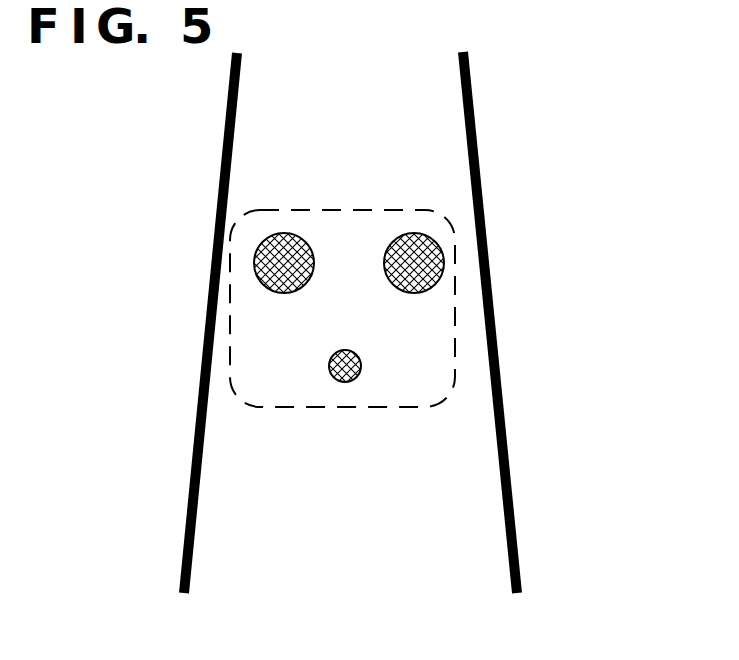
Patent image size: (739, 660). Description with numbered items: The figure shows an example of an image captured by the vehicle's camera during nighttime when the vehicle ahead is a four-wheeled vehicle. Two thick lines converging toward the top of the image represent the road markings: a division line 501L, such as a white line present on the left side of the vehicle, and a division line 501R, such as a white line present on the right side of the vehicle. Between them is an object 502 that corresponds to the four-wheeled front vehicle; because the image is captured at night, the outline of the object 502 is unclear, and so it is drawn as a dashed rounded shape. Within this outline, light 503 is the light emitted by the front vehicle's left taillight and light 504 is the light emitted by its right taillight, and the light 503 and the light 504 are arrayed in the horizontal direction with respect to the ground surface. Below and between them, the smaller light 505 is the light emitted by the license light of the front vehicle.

The division line 501L is at (197, 445).
The division line 501R is at (505, 450).
The object 502 is at (243, 216).
The light 503 is at (254, 259).
The light 504 is at (444, 263).
The light 505 is at (329, 364).